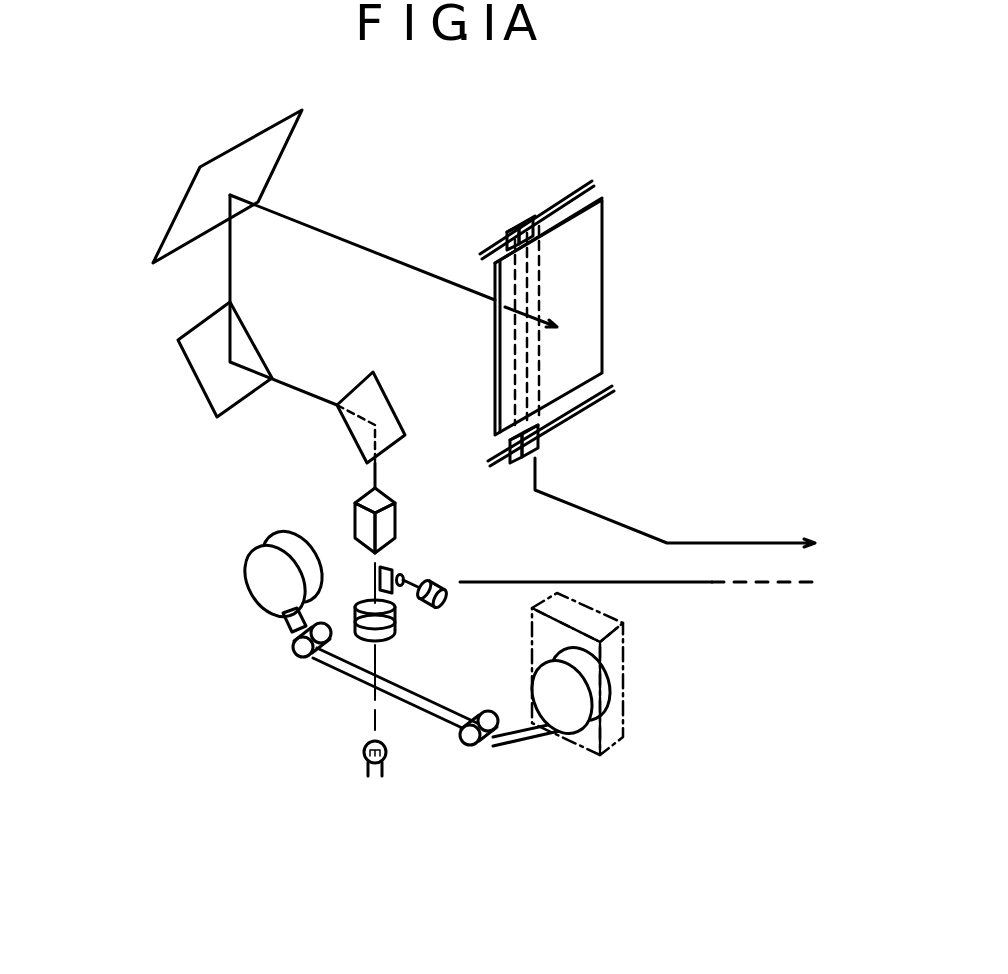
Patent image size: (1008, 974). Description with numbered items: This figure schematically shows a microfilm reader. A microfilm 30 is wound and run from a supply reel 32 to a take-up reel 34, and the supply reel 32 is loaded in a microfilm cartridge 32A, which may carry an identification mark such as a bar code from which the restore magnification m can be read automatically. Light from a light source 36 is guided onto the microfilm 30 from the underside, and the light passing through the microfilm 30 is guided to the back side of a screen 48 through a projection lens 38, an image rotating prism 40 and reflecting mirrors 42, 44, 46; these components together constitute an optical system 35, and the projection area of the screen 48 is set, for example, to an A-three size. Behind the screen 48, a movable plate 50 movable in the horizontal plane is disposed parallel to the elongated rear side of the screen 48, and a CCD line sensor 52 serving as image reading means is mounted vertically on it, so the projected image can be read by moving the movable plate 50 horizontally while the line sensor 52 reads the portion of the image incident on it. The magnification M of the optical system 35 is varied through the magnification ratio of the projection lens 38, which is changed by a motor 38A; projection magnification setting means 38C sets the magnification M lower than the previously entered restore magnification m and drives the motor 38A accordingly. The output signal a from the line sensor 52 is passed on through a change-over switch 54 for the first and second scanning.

The microfilm 30 is at (335, 670).
The supply reel 32 is at (603, 690).
The microfilm cartridge 32A is at (625, 732).
The take-up reel 34 is at (247, 550).
The optical system 35 is at (132, 502).
The light source 36 is at (363, 753).
The projection lens 38 is at (400, 622).
The motor 38A is at (458, 584).
The projection magnification setting means 38C is at (674, 584).
The image rotating prism 40 is at (395, 520).
The reflecting mirror 42 is at (355, 442).
The reflecting mirror 44 is at (198, 380).
The reflecting mirror 46 is at (283, 158).
The screen 48 is at (603, 277).
The movable plate 50 is at (518, 212).
The CCD line sensor 52 is at (540, 420).
The change-over switch 54 is at (700, 521).